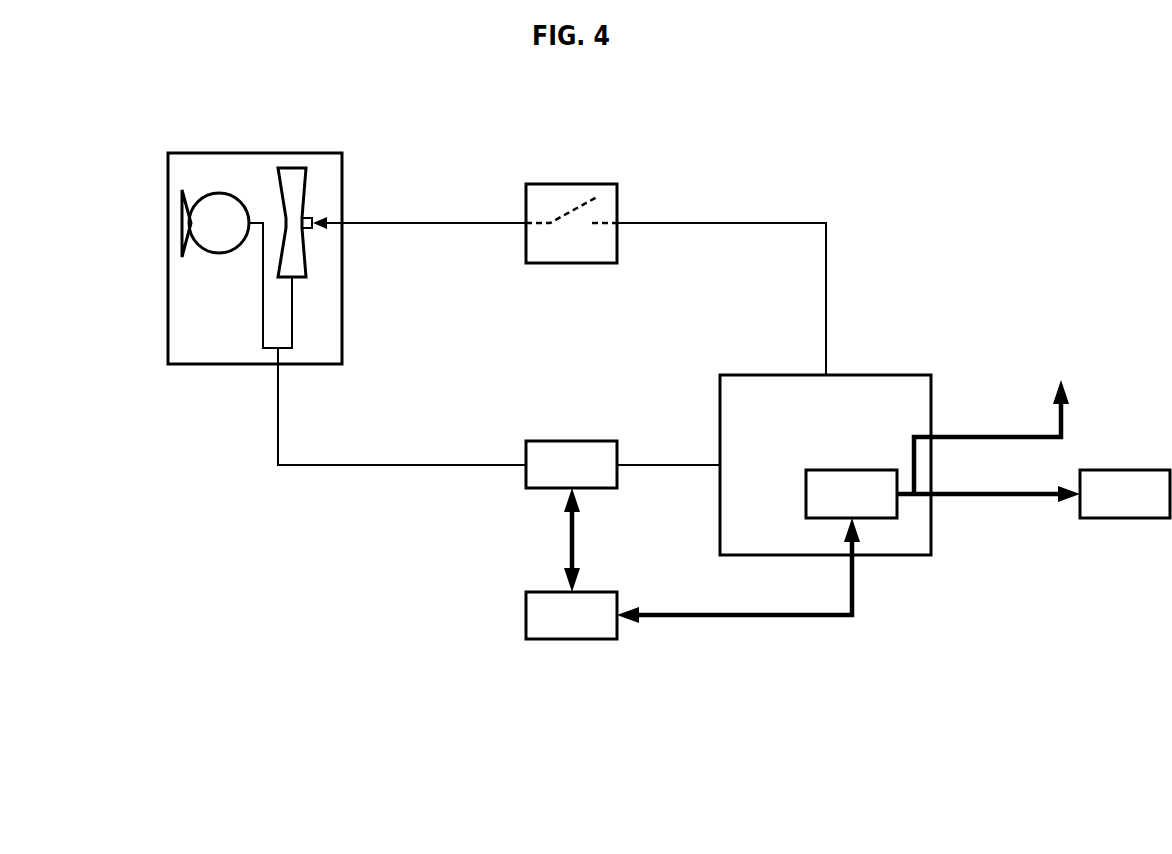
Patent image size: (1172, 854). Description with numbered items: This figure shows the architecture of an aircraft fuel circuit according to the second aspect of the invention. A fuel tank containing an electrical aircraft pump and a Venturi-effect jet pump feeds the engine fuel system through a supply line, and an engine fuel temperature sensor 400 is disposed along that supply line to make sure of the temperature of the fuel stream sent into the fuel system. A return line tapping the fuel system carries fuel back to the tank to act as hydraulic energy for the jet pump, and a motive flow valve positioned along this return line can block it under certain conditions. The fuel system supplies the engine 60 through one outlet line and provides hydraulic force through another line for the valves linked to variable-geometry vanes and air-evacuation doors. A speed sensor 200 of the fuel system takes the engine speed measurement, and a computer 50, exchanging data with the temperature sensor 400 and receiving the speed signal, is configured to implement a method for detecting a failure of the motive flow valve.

The speed sensor 200 is at (853, 462).
The engine 60 is at (1125, 462).
The engine fuel temperature sensor 400 is at (571, 433).
The computer 50 is at (572, 648).